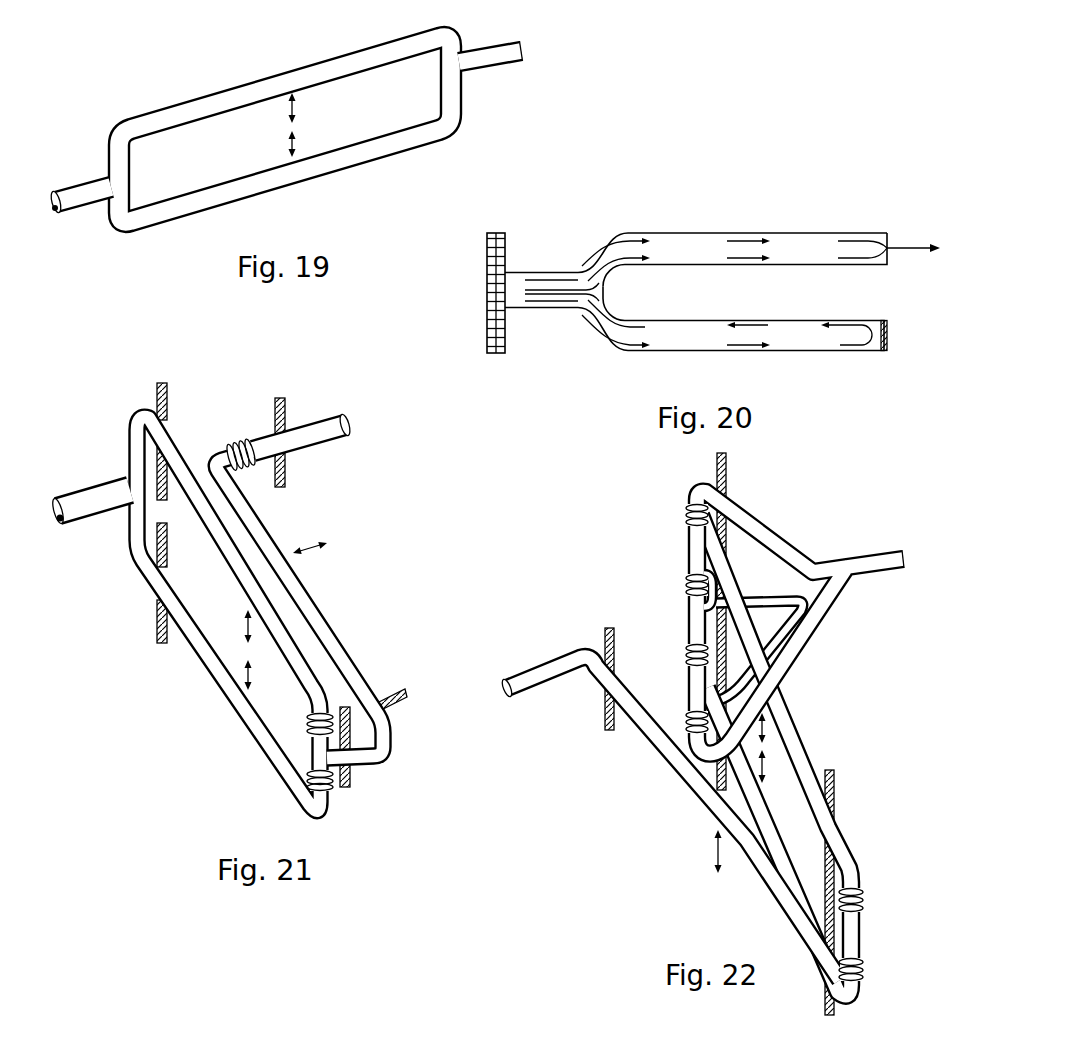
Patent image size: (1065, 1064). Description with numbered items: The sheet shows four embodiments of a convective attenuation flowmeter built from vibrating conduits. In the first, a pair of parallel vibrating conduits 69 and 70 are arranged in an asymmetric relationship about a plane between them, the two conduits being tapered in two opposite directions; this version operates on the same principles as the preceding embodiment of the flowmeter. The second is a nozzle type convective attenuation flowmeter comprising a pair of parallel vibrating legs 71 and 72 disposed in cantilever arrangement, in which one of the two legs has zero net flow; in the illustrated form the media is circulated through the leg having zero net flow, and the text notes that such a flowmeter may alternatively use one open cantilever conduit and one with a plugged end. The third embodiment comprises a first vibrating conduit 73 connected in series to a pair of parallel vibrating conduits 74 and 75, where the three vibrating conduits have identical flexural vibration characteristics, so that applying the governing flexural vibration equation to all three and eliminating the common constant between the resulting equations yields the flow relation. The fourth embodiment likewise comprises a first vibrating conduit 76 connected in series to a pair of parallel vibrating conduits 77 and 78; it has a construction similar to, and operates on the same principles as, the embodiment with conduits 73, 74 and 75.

In FIG. 19, the parallel vibrating conduit 69 is at (294, 71).
In FIG. 19, the parallel vibrating conduit 70 is at (294, 181).
In FIG. 20, the vibrating leg 71 is at (800, 232).
In FIG. 20, the vibrating leg 72 is at (793, 354).
In FIG. 21, the first vibrating conduit 73 is at (313, 600).
In FIG. 21, the parallel vibrating conduit 74 is at (196, 470).
In FIG. 21, the parallel vibrating conduit 75 is at (219, 684).
In FIG. 22, the first vibrating conduit 76 is at (668, 765).
In FIG. 22, the parallel vibrating conduit 77 is at (806, 744).
In FIG. 22, the parallel vibrating conduit 78 is at (803, 937).